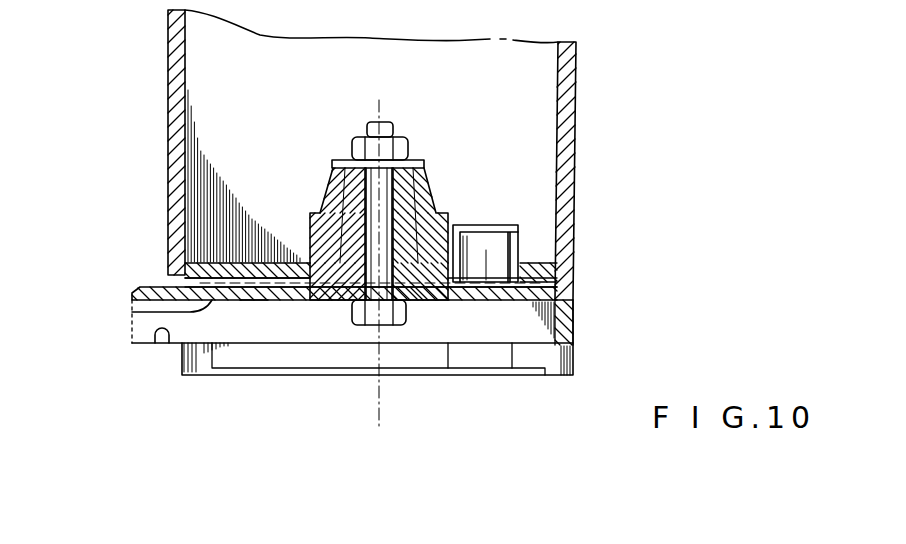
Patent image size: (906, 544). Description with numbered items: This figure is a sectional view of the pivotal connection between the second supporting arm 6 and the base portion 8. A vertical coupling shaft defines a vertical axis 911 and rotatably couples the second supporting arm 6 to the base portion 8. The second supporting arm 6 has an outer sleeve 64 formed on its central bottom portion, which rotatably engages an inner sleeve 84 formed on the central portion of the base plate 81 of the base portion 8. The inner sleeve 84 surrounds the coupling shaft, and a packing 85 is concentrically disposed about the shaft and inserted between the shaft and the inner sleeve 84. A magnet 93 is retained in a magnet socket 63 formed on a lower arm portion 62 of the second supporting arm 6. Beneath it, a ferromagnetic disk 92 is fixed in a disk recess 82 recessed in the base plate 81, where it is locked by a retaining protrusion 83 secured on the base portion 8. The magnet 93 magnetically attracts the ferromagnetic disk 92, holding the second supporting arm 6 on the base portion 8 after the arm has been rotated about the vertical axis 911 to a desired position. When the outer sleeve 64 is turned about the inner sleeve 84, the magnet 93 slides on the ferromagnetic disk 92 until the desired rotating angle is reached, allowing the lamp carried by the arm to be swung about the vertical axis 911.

The second supporting arm 6 is at (577, 108).
The outer sleeve 64 is at (316, 215).
The magnet socket 63 is at (493, 225).
The lower arm portion 62 is at (510, 258).
The magnet 93 is at (488, 265).
The retaining protrusion 83 is at (132, 307).
The base portion 8 is at (575, 338).
The base plate 81 is at (168, 342).
The ferromagnetic disk 92 is at (253, 303).
The packing 85 is at (350, 290).
The vertical axis 911 is at (378, 396).
The inner sleeve 84 is at (407, 303).
The disk recess 82 is at (540, 290).